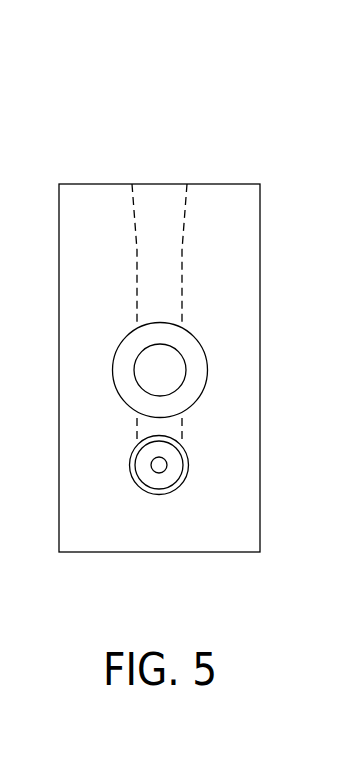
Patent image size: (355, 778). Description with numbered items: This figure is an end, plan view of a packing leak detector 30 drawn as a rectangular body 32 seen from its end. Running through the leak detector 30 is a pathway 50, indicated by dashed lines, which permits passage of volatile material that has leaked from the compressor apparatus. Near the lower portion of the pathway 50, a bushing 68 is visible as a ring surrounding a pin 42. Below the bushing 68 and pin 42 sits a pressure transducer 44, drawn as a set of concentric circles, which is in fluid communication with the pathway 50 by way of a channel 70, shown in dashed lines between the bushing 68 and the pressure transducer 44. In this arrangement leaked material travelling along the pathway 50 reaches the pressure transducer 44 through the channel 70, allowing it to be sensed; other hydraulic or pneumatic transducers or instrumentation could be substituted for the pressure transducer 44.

The leak detector 30 is at (188, 149).
The housing plate 32 is at (260, 215).
The pathway 50 is at (137, 213).
The pin 42 is at (165, 370).
The bushing 68 is at (188, 392).
The channel 70 is at (160, 428).
The pressure transducer 44 is at (185, 468).